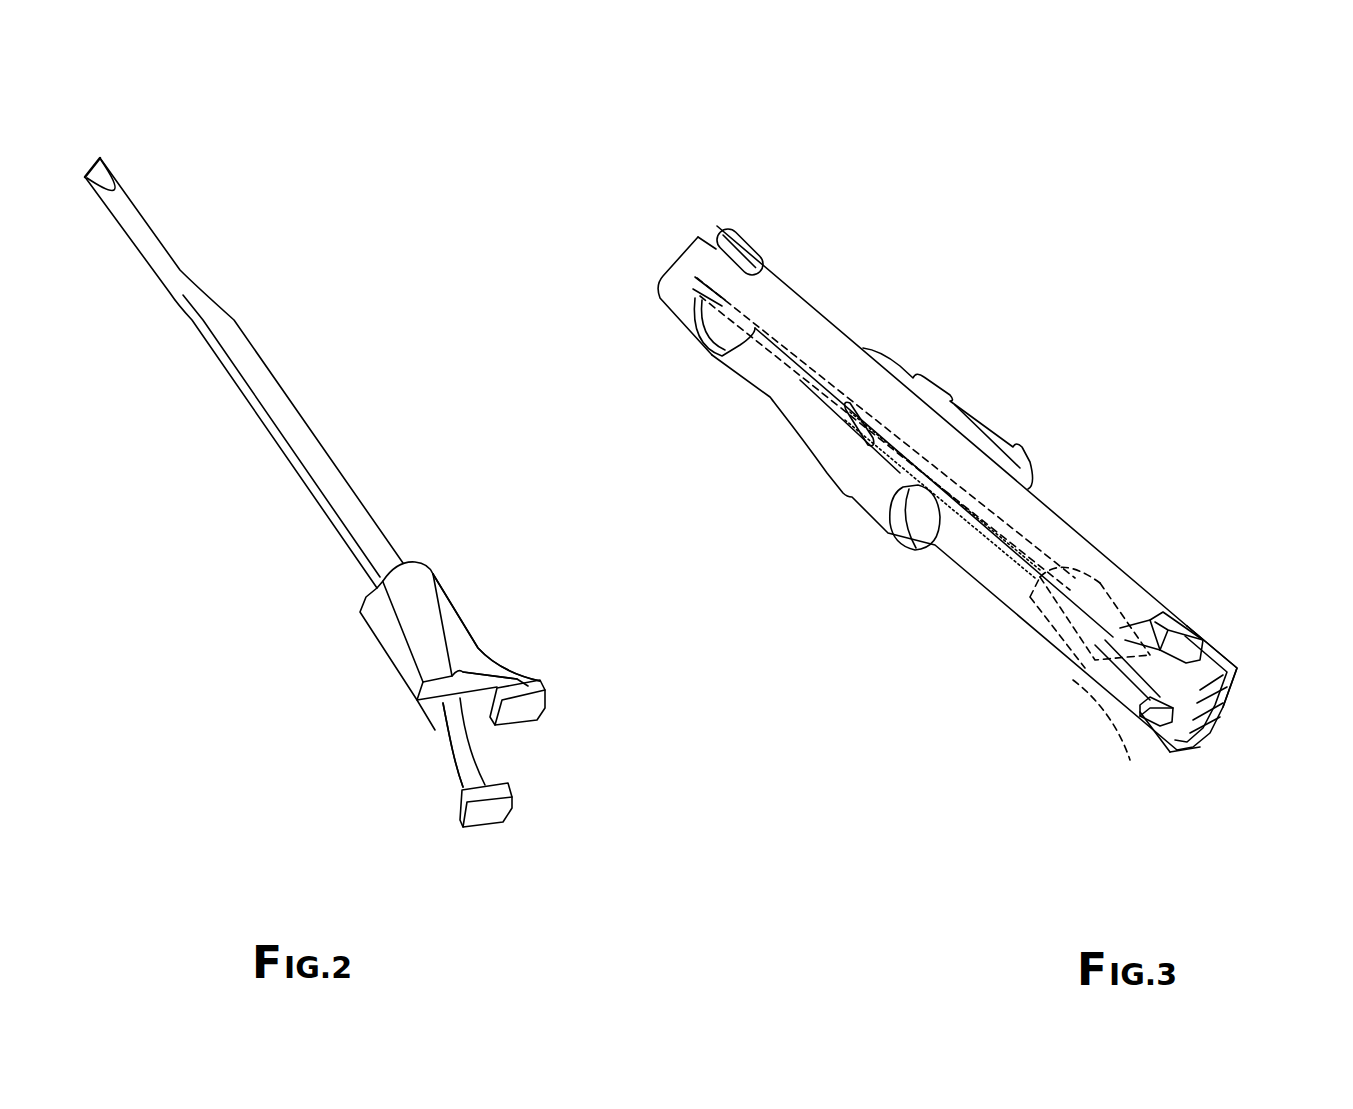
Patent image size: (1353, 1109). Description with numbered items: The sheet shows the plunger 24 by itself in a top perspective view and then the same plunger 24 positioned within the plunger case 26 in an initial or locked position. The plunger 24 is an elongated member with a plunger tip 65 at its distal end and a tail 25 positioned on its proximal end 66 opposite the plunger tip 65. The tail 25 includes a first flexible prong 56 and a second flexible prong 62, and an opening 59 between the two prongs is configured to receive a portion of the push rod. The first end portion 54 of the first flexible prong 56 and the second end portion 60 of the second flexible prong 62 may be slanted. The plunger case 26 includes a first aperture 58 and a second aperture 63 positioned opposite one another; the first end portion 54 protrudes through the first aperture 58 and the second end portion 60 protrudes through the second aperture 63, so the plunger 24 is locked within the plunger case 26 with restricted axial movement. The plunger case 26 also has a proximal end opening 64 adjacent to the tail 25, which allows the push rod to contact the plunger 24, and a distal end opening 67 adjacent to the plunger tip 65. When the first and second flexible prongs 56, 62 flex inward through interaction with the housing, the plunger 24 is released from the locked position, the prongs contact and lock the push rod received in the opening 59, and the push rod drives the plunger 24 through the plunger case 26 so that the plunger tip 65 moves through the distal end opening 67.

In FIG. 2, the plunger 24 is at (285, 338).
In FIG. 3, the plunger 24 is at (893, 418).
In FIG. 2, the tail 25 is at (497, 632).
In FIG. 3, the tail 25 is at (1080, 650).
In FIG. 3, the plunger case 26 is at (822, 293).
In FIG. 2, the first end portion 54 is at (538, 687).
In FIG. 3, the first end portion 54 is at (1185, 622).
In FIG. 2, the first flexible prong 56 is at (500, 665).
In FIG. 3, the first flexible prong 56 is at (1137, 623).
In FIG. 3, the first aperture 58 is at (1210, 640).
In FIG. 2, the opening 59 is at (520, 752).
In FIG. 2, the second end portion 60 is at (435, 832).
In FIG. 3, the second end portion 60 is at (1153, 727).
In FIG. 2, the second flexible prong 62 is at (458, 745).
In FIG. 3, the second flexible prong 62 is at (1123, 690).
In FIG. 3, the second aperture 63 is at (1157, 765).
In FIG. 3, the proximal end opening 64 is at (1217, 737).
In FIG. 2, the plunger tip 65 is at (118, 140).
In FIG. 3, the plunger tip 65 is at (752, 325).
In FIG. 2, the proximal end 66 is at (370, 700).
In FIG. 3, the distal end opening 67 is at (690, 226).